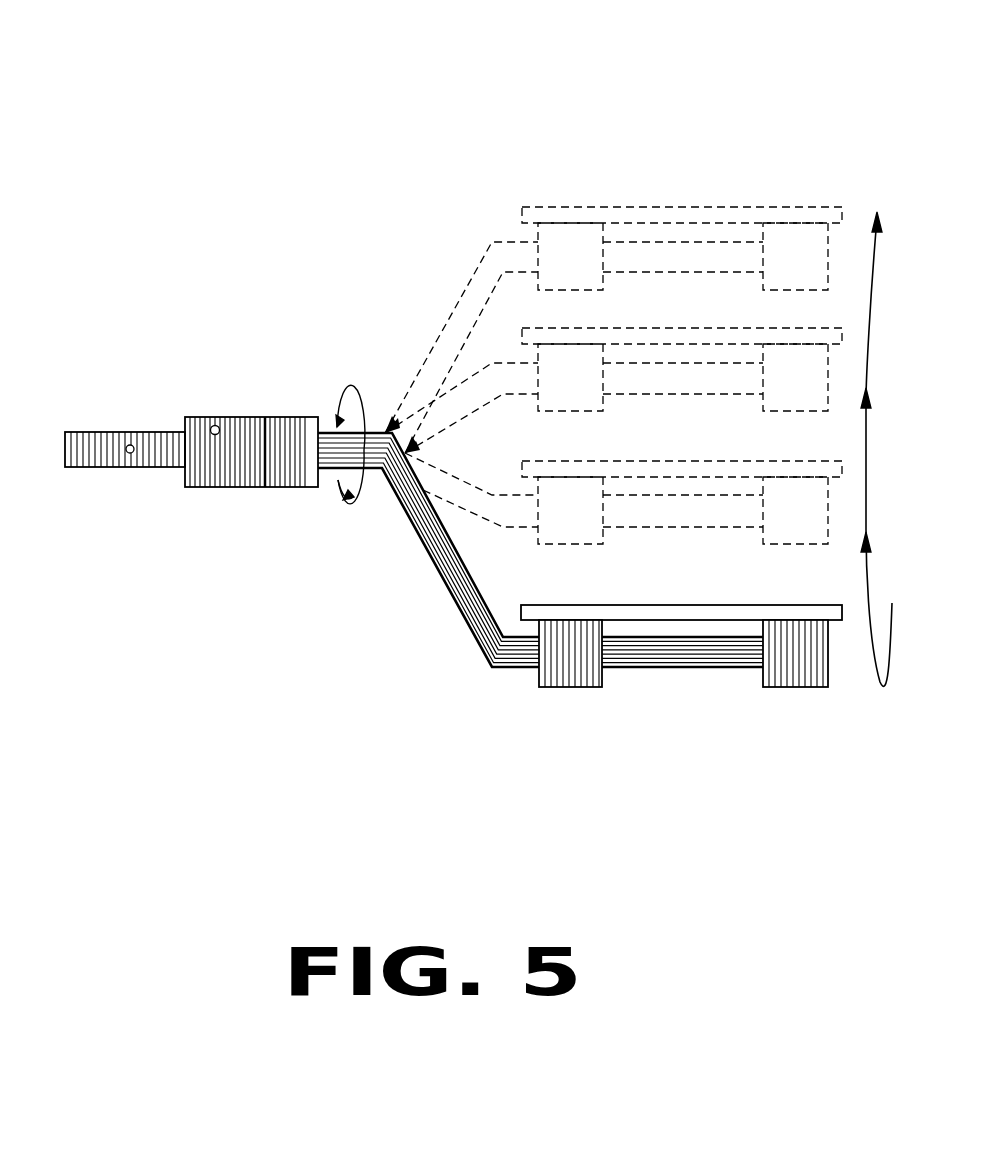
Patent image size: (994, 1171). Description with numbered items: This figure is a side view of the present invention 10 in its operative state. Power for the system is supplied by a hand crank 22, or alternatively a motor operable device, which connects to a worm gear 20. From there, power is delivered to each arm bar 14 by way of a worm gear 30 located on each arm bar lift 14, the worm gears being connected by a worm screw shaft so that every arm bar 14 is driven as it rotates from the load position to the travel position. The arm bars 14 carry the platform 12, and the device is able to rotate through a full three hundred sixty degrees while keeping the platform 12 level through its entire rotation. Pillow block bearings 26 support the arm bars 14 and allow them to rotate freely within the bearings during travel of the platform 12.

The present invention 10 is at (715, 128).
The platform 12 is at (693, 207).
The arm bar 14 is at (443, 582).
The worm gear 20 is at (212, 417).
The hand crank 22 is at (213, 425).
The pillow block bearing 26 is at (308, 425).
The worm gear 30 is at (222, 480).